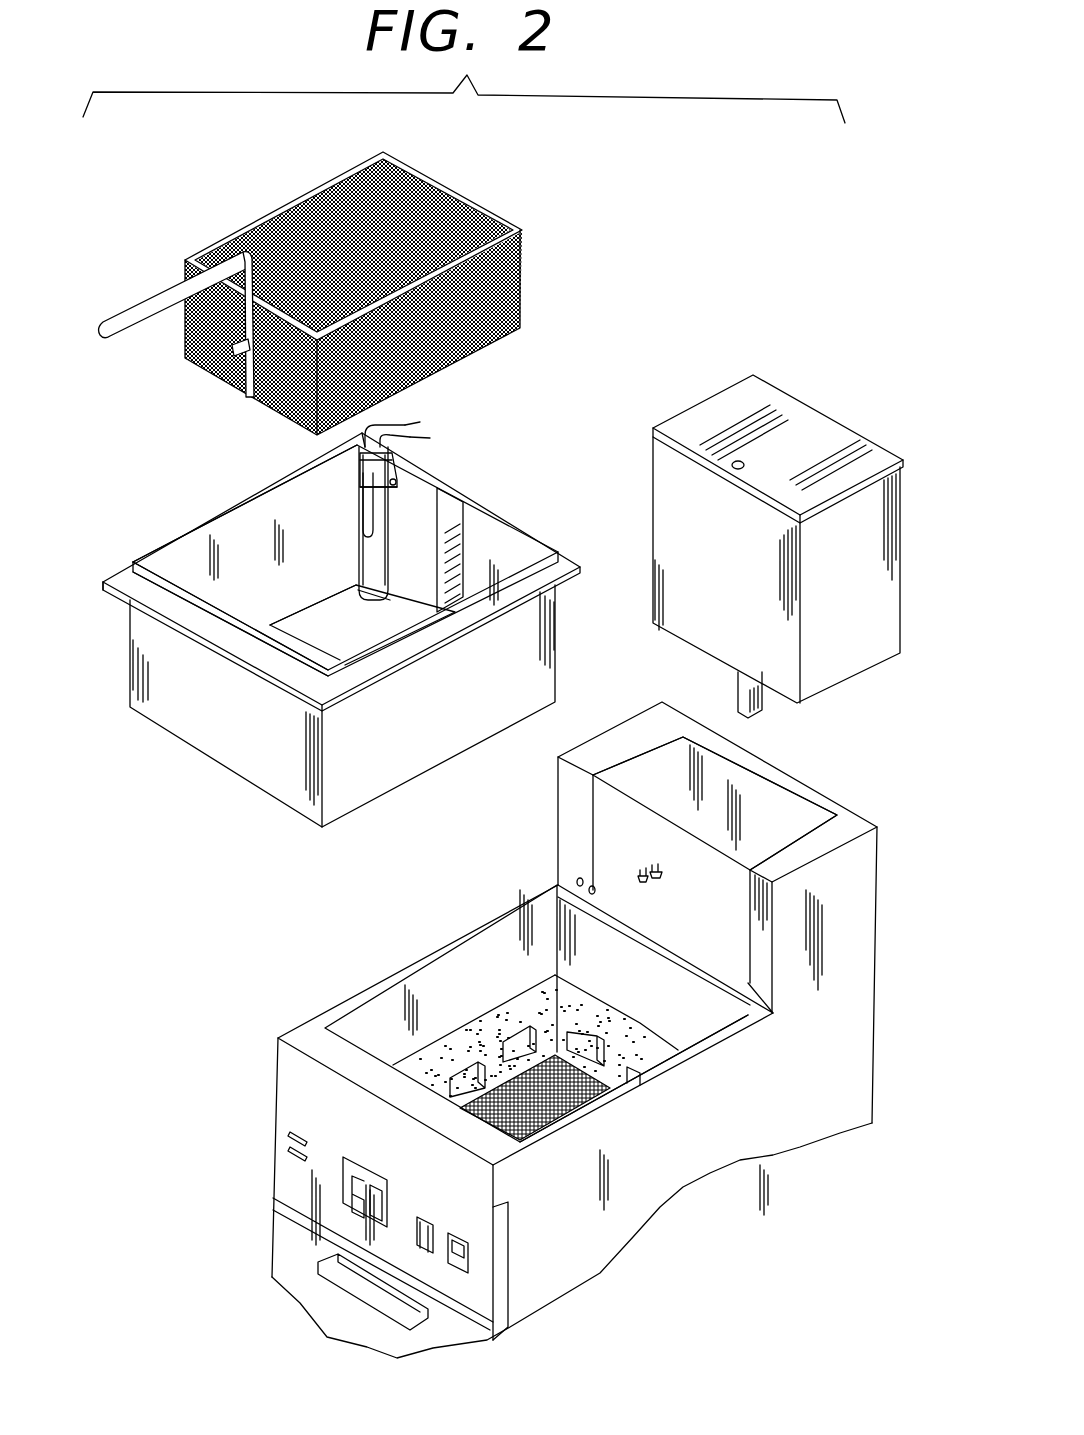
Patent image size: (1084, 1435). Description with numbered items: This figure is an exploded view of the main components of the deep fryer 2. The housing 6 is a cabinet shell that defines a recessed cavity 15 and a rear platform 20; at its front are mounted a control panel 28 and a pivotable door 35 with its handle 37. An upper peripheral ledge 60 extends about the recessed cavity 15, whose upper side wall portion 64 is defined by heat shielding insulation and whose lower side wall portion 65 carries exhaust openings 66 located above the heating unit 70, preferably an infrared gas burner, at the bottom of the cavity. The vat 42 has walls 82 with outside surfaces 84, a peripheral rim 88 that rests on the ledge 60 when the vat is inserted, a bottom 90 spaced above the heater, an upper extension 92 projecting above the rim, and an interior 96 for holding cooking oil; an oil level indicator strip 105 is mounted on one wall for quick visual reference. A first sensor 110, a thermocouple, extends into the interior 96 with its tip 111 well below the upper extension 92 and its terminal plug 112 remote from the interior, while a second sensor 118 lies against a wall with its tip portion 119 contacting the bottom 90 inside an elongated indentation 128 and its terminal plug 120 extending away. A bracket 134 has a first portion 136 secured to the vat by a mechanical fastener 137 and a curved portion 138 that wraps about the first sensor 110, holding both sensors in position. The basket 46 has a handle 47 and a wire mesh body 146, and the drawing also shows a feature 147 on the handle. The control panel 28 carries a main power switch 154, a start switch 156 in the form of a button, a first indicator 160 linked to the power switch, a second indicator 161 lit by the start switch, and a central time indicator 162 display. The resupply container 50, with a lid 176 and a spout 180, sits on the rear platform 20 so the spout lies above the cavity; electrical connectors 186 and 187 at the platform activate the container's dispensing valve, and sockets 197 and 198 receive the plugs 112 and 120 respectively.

The deep fryer 2 is at (780, 238).
The housing 6 is at (880, 872).
The recessed cavity 15 is at (375, 997).
The rear platform 20 is at (730, 887).
The control panel 28 is at (280, 1190).
The pivotable door 35 is at (283, 1273).
The handle 37 is at (330, 1290).
The vat 42 is at (205, 742).
The basket 46 is at (463, 175).
The handle 47 is at (152, 305).
The container 50 is at (875, 543).
The upper peripheral ledge 60 is at (572, 1120).
The upper side wall portion 64 is at (460, 975).
The lower side wall portion 65 is at (515, 1000).
The exhaust openings 66 is at (585, 1040).
The heating unit 70 is at (610, 1120).
The walls 82 is at (243, 530).
The outside surfaces 84 is at (373, 769).
The peripheral rim 88 is at (103, 590).
The bottom 90 is at (332, 650).
The upper extension 92 is at (170, 600).
The interior 96 is at (205, 555).
The oil level indicator strip 105 is at (443, 508).
The first sensor 110 is at (385, 418).
The tip 111 is at (365, 530).
The terminal plug 112 is at (410, 435).
The second sensor 118 is at (410, 450).
The tip portion 119 is at (385, 600).
The terminal plug 120 is at (420, 440).
The elongated indentation 128 is at (360, 455).
The bracket 134 is at (355, 465).
The first portion 136 is at (370, 492).
The mechanical fastener 137 is at (385, 482).
The curved portion 138 is at (358, 476).
The wire mesh body 146 is at (522, 270).
The handle hook 147 is at (248, 395).
The main power switch 154 is at (470, 1265).
The start switch 156 is at (435, 1225).
The first indicator 160 is at (290, 1138).
The second indicator 161 is at (290, 1155).
The time indicator 162 is at (340, 1200).
The lid 176 is at (805, 420).
The spout 180 is at (735, 690).
The electrical connector 186 is at (643, 873).
The electrical connector 187 is at (655, 870).
The socket 197 is at (578, 878).
The socket 198 is at (600, 892).